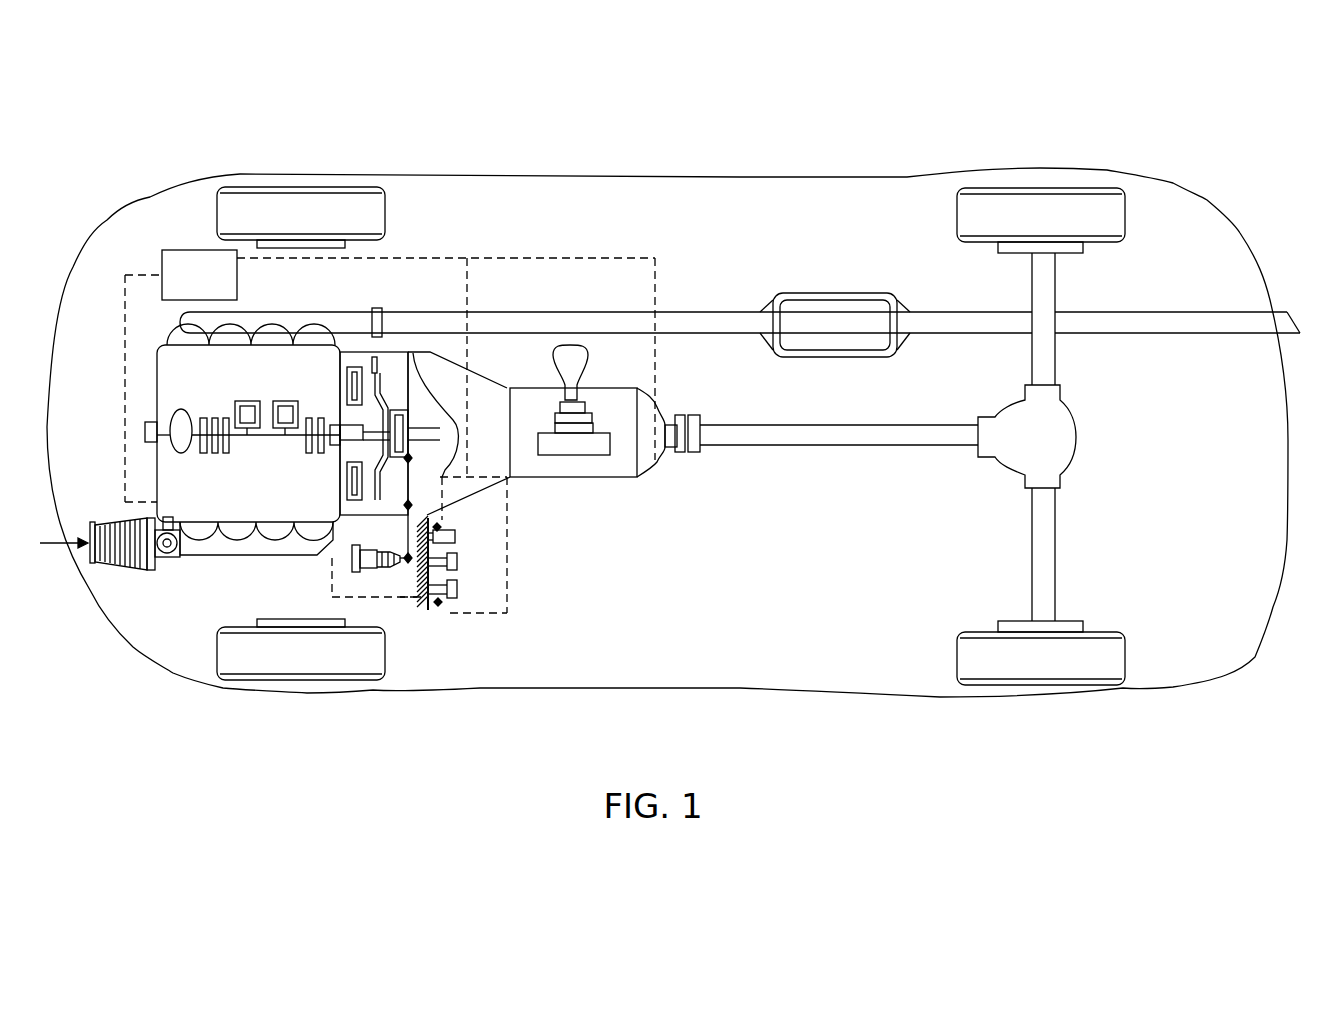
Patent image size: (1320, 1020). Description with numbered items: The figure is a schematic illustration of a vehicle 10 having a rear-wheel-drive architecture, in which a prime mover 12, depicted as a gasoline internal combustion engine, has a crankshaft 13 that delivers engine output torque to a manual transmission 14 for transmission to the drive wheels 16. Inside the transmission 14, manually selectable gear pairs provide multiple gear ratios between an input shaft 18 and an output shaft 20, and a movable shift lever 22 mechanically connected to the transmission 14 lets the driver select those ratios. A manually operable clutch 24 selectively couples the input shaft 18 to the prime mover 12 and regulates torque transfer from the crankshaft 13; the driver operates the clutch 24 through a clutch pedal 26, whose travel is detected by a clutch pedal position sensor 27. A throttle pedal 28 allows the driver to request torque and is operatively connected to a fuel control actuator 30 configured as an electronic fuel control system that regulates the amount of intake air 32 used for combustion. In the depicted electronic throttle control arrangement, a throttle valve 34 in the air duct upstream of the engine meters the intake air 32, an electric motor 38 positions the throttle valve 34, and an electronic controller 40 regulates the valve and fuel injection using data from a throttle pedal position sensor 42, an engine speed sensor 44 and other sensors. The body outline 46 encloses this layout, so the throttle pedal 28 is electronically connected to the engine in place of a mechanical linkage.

The vehicle 10 is at (992, 118).
The prime mover 12 is at (310, 357).
The crankshaft 13 is at (336, 465).
The manual transmission 14 is at (612, 478).
The drive wheels 16 is at (1113, 200).
The input shaft 18 is at (433, 428).
The output shaft 20 is at (683, 415).
The shift lever 22 is at (598, 352).
The clutch 24 is at (402, 358).
The clutch pedal 26 is at (458, 590).
The clutch pedal position sensor 27 is at (438, 603).
The throttle pedal 28 is at (458, 535).
The fuel control actuator 30 is at (115, 343).
The intake air 32 is at (53, 548).
The throttle valve 34 is at (164, 556).
The electric motor 38 is at (170, 520).
The electronic controller 40 is at (160, 265).
The throttle pedal position sensor 42 is at (441, 527).
The engine speed sensor 44 is at (143, 436).
The vehicle body 46 is at (698, 690).